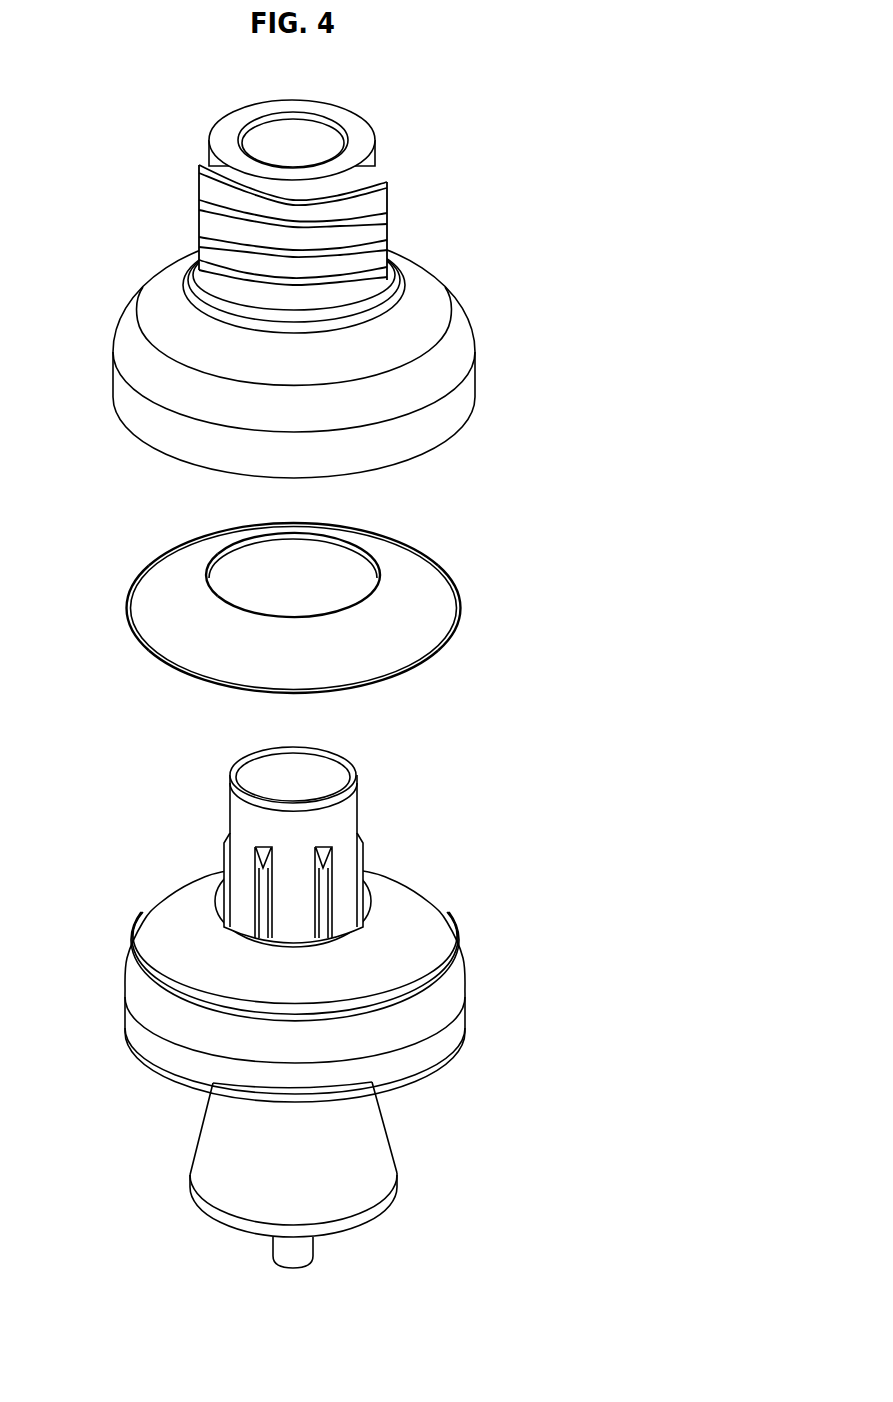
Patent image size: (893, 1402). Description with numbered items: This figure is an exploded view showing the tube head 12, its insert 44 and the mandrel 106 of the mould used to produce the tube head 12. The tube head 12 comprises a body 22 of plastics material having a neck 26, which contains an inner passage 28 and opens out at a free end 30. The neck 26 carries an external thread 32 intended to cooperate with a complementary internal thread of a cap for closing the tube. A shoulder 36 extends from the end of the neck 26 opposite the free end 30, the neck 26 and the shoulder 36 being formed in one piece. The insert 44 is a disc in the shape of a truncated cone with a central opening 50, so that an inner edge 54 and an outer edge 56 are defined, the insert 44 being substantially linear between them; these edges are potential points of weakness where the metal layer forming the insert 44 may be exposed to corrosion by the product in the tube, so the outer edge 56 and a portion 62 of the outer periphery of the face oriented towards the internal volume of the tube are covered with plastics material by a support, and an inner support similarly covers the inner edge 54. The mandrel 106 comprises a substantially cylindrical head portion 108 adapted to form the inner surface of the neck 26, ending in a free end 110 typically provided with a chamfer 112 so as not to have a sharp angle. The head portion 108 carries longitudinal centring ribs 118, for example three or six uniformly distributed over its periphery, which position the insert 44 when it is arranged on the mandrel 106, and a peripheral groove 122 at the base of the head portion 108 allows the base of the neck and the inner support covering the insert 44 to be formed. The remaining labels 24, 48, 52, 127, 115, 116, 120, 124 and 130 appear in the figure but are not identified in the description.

The tube head 12 is at (336, 266).
The body 22 is at (420, 267).
The shoulder 24 is at (463, 305).
The neck 26 is at (377, 165).
The inner passage 28 is at (296, 150).
The free end 30 is at (218, 118).
The external thread 32 is at (200, 182).
The shoulder 36 is at (475, 363).
The insert 44 is at (302, 589).
The outer edge 48 is at (453, 632).
The central opening 50 is at (254, 551).
The inner edge 52 is at (218, 552).
The inner edge 54 is at (308, 538).
The outer edge 56 is at (138, 647).
The portion of the outer periphery 62 is at (460, 607).
The rim 127 is at (207, 573).
The mandrel 106 is at (309, 984).
The head portion 108 is at (363, 802).
The free end 110 is at (310, 777).
The chamfer 112 is at (228, 780).
The top surface 115 is at (127, 968).
The flange 116 is at (418, 913).
The centring ribs 118 is at (372, 883).
The side wall 120 is at (279, 849).
The peripheral groove 122 is at (215, 892).
The flange edge 124 is at (433, 947).
The slots 130 is at (282, 947).